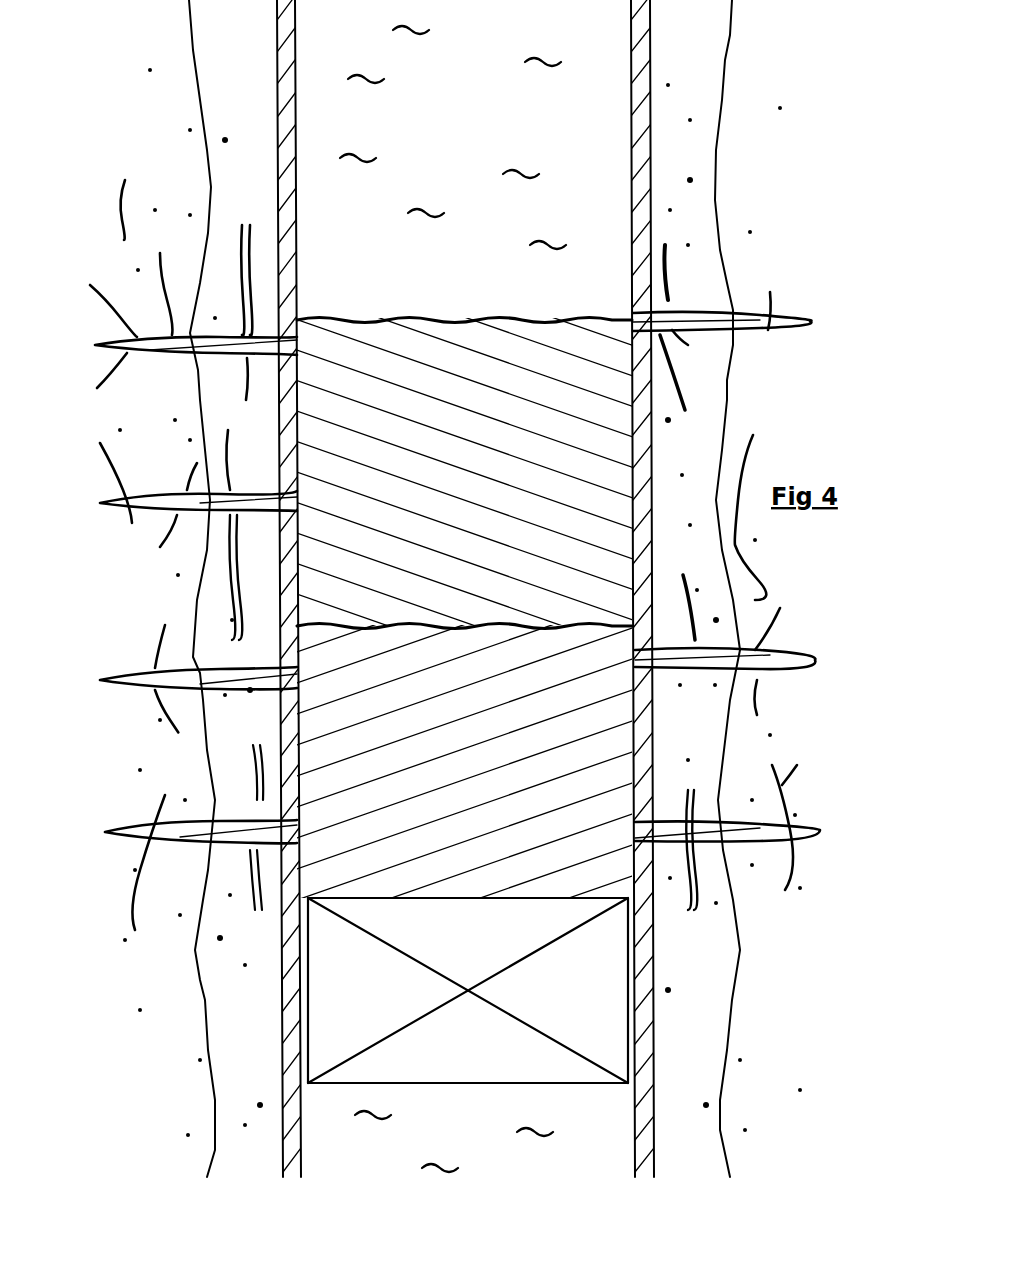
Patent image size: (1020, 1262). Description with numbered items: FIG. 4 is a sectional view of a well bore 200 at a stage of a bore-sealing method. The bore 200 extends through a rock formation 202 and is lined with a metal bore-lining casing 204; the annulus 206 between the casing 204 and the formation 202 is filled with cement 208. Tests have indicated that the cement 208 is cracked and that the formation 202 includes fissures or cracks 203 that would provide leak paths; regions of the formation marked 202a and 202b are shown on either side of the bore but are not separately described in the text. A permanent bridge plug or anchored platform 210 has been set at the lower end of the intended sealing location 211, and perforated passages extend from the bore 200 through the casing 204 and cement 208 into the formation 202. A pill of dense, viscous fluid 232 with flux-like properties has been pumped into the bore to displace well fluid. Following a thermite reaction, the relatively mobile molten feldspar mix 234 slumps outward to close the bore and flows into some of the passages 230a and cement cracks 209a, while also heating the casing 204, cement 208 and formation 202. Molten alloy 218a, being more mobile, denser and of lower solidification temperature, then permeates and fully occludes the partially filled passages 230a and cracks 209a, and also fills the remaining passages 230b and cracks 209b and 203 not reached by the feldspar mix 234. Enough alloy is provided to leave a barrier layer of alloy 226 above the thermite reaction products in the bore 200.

The well bore 200 is at (585, 35).
The rock formation 202 is at (493, 588).
The lower formation zone 202a is at (757, 685).
The upper formation zone 202b is at (160, 253).
The cracks 203 is at (757, 442).
The bore-lining casing 204 is at (650, 158).
The annulus 206 is at (678, 281).
The cement 208 is at (708, 345).
The cement cracks 209a is at (693, 607).
The cement cracks 209b is at (693, 402).
The bridge plug 210 is at (632, 957).
The sealing location 211 is at (162, 605).
The molten alloy 218a is at (120, 318).
The barrier layer of alloy 226 is at (380, 315).
The passages 230a is at (120, 680).
The passages 230b is at (160, 350).
The fluid 232 is at (453, 599).
The molten feldspar mix 234 is at (620, 752).